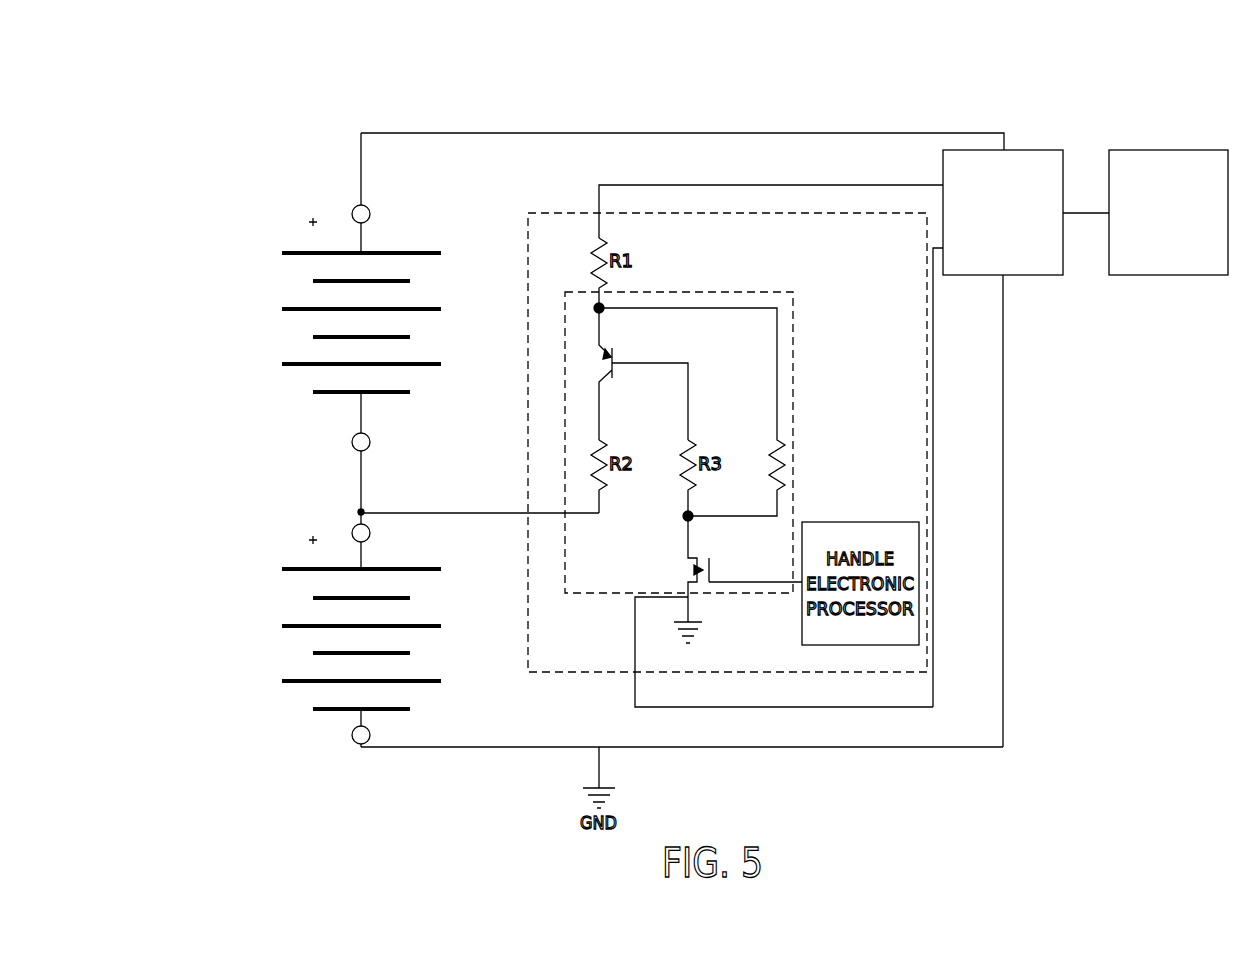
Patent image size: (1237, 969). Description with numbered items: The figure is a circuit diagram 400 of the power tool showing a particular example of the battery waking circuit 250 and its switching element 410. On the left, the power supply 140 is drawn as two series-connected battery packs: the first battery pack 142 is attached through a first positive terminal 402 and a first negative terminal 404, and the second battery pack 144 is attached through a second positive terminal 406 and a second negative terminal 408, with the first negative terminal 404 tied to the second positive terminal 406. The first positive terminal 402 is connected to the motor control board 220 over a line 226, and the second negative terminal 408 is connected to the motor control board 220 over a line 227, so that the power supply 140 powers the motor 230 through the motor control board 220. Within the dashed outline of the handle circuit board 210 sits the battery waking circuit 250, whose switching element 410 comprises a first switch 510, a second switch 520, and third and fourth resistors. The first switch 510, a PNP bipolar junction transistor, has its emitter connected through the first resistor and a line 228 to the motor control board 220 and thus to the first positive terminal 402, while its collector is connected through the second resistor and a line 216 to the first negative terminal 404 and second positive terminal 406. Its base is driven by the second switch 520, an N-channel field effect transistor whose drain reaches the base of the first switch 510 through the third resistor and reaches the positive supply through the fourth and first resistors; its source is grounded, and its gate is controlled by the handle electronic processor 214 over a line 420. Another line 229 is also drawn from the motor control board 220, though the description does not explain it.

The circuit diagram 400 is at (300, 95).
The power supply 140 is at (245, 415).
The first battery pack 142 is at (313, 281).
The second battery pack 144 is at (313, 598).
The first positive terminal 402 is at (352, 212).
The first negative terminal 404 is at (352, 442).
The second positive terminal 406 is at (352, 532).
The second negative terminal 408 is at (352, 737).
The handle circuit board 210 is at (526, 240).
The handle electronic processor 214 is at (870, 646).
The line 216 is at (473, 513).
The motor control board 220 is at (1020, 277).
The line 226 is at (619, 133).
The line 227 is at (1005, 570).
The line 228 is at (699, 185).
The control line 229 is at (936, 446).
The motor 230 is at (1165, 277).
The battery waking circuit 250 is at (715, 280).
The switching element 410 is at (795, 362).
The line 420 is at (764, 584).
The first switch 510 is at (596, 352).
The second switch 520 is at (690, 567).